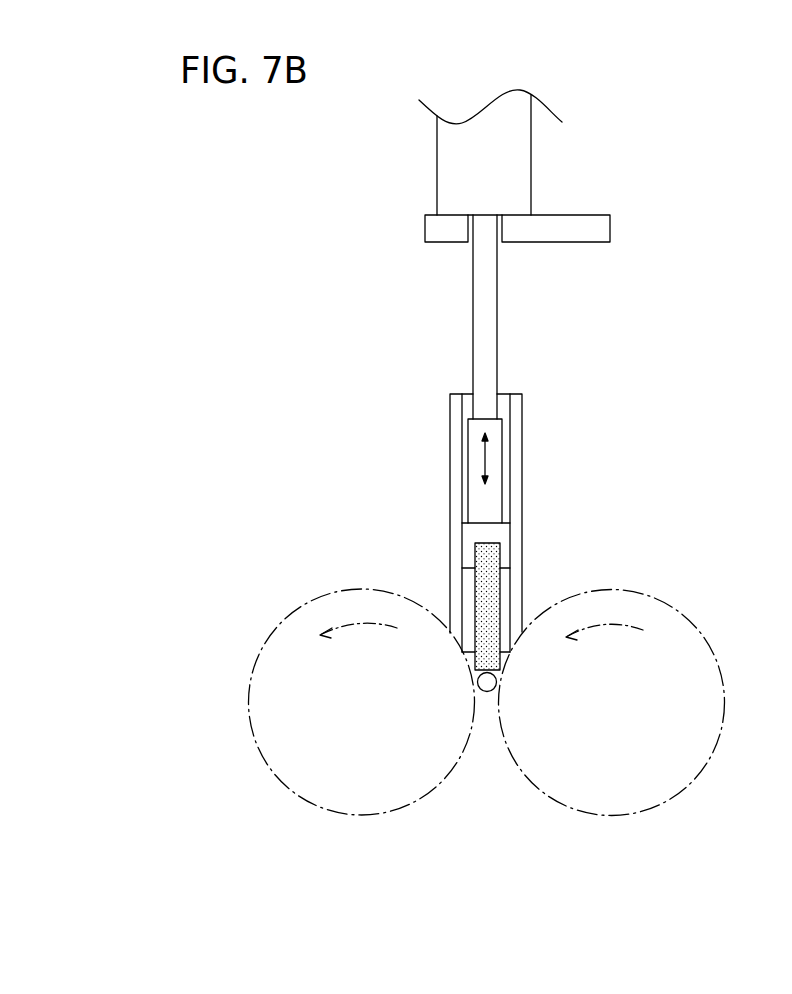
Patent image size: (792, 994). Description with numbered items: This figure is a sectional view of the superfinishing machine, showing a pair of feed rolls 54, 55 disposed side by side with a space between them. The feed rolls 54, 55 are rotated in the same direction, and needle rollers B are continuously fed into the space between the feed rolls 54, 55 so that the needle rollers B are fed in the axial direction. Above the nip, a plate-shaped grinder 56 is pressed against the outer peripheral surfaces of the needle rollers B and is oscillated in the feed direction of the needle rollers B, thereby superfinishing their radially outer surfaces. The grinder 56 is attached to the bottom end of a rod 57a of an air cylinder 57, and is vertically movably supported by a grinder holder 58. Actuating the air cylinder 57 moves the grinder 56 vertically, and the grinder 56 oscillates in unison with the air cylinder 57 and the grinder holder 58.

The feed roll 54 is at (642, 590).
The feed roll 55 is at (328, 598).
The plate-shaped grinder 56 is at (483, 557).
The air cylinder 57 is at (503, 166).
The rod 57a is at (483, 318).
The grinder holder 58 is at (518, 490).
The needle roller B is at (485, 690).